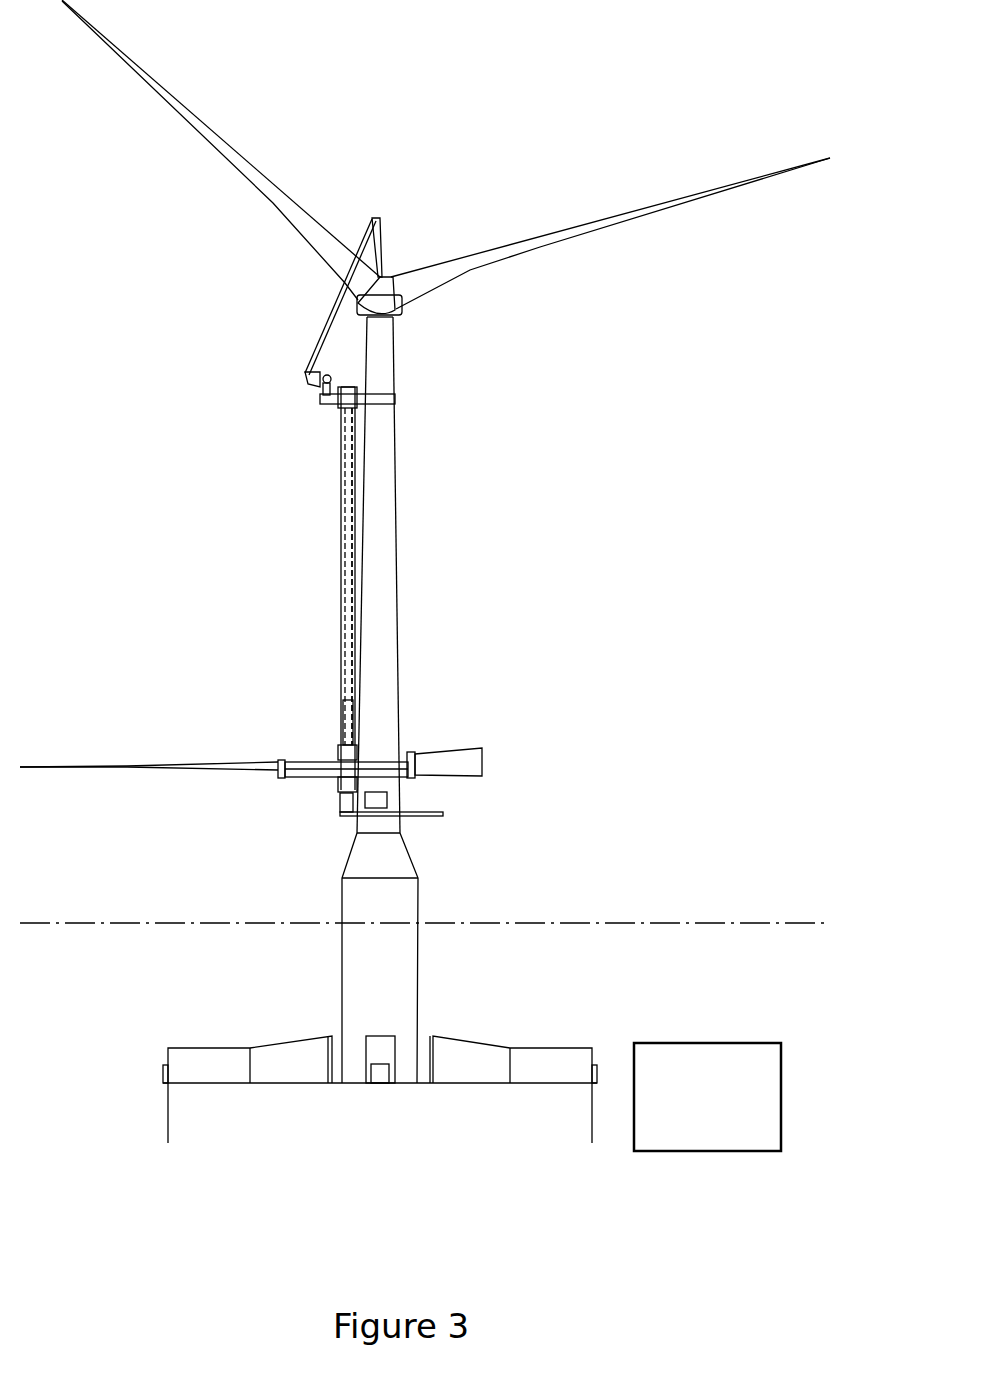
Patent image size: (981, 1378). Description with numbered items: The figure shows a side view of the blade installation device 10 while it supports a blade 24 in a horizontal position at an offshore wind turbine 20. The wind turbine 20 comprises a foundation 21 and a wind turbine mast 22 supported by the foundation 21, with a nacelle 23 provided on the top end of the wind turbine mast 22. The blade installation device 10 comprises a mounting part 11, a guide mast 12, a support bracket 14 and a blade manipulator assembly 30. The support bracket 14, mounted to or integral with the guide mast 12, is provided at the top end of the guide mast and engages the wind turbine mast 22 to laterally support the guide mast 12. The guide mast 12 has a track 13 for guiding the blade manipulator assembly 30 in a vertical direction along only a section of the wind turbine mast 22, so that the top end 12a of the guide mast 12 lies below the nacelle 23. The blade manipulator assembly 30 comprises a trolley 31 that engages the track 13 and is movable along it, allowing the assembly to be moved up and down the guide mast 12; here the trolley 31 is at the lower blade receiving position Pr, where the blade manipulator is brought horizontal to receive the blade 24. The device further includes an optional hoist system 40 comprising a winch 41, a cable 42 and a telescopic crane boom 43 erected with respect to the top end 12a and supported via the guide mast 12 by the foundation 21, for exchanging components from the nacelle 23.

The blade installation device 10 is at (238, 564).
The mounting part 11 is at (328, 817).
The guide mast 12 is at (333, 461).
The top end of the guide mast 12a is at (376, 382).
The track 13 is at (343, 685).
The support bracket 14 is at (405, 400).
The offshore wind turbine 20 is at (582, 176).
The foundation 21 is at (432, 853).
The wind turbine mast 22 is at (400, 611).
The nacelle 23 is at (428, 315).
The blade 24 is at (148, 750).
The blade manipulator assembly 30 is at (279, 788).
The trolley 31 is at (363, 744).
The hoist system 40 is at (298, 390).
The winch 41 is at (316, 369).
The cable 42 is at (390, 231).
The crane boom 43 is at (322, 287).
The lower blade receiving position Pr is at (497, 762).